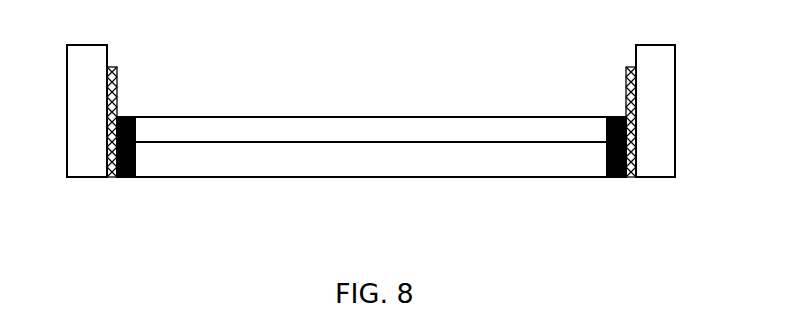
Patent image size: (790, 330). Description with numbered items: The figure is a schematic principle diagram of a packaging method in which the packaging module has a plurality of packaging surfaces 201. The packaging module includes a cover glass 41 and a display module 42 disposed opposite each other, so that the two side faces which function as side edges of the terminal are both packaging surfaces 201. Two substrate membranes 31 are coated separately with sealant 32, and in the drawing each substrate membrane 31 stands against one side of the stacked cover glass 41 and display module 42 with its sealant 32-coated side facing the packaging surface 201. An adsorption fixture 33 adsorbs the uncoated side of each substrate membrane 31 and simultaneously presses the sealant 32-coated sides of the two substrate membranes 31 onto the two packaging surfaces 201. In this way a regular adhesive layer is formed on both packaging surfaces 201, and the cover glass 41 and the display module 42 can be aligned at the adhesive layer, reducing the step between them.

The substrate membrane 31 is at (110, 67).
The sealant 32 is at (123, 117).
The adsorption fixture 33 is at (78, 167).
The cover glass 41 is at (368, 130).
The display module 42 is at (368, 168).
The packaging surface 201 is at (135, 143).